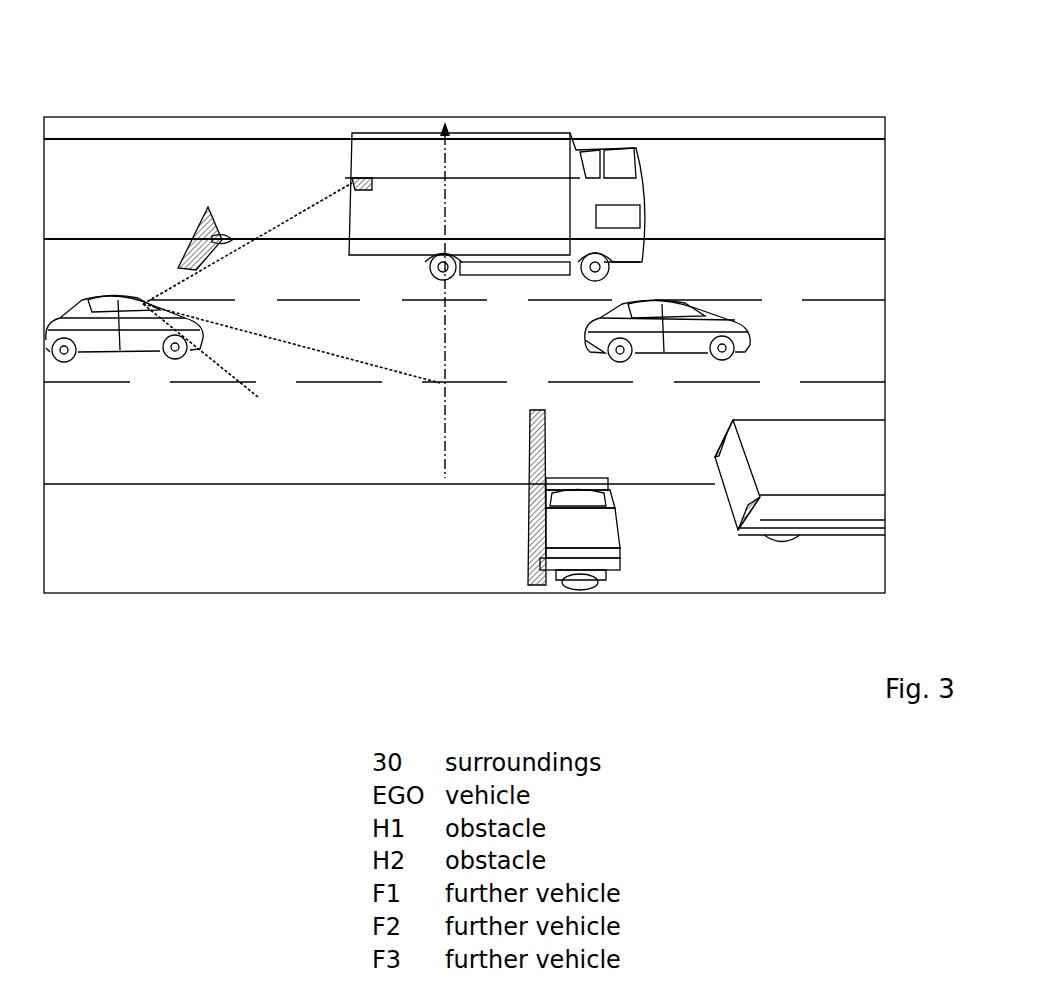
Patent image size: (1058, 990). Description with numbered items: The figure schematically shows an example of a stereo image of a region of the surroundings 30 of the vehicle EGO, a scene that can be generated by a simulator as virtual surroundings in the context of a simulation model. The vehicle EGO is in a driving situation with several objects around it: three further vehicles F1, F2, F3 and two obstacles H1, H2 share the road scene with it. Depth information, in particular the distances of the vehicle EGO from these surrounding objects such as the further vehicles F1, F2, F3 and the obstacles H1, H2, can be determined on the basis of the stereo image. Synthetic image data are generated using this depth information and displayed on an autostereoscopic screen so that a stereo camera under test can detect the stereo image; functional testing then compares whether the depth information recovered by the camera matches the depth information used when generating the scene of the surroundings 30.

The surroundings 30 is at (830, 96).
The vehicle EGO is at (100, 290).
The obstacle H1 is at (200, 255).
The obstacle H2 is at (606, 572).
The further vehicle F1 is at (372, 157).
The further vehicle F2 is at (690, 300).
The further vehicle F3 is at (822, 507).